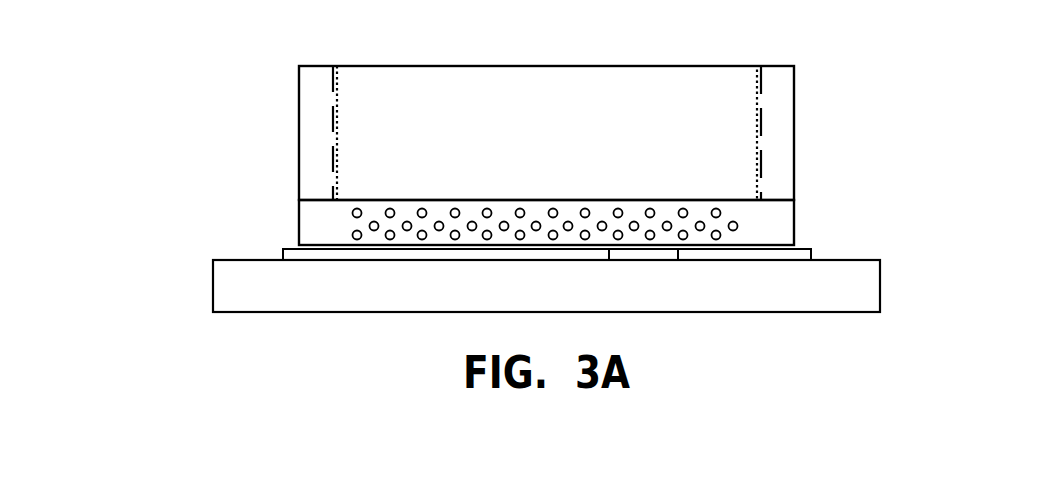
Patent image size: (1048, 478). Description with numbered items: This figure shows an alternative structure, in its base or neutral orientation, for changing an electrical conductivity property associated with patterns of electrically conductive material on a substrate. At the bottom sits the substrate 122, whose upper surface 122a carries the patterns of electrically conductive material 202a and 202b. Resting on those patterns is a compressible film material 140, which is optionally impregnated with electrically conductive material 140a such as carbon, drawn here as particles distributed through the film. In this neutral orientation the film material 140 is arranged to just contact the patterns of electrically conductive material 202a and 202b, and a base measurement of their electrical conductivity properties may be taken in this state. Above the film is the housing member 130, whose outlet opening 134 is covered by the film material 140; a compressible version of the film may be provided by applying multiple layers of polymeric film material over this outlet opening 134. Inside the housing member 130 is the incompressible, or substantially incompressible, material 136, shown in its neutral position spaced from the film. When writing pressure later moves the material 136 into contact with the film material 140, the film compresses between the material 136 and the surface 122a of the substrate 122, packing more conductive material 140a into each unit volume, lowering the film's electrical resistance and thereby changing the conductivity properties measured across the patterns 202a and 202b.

The substrate 122 is at (266, 302).
The surface of the substrate 122a is at (247, 258).
The housing member 130 is at (795, 138).
The outlet opening 134 is at (335, 200).
The incompressible material 136 is at (592, 78).
The film material 140 is at (795, 224).
The electrically conductive material 140a is at (455, 213).
The pattern of electrically conductive material 202a is at (446, 254).
The pattern of electrically conductive material 202b is at (812, 253).